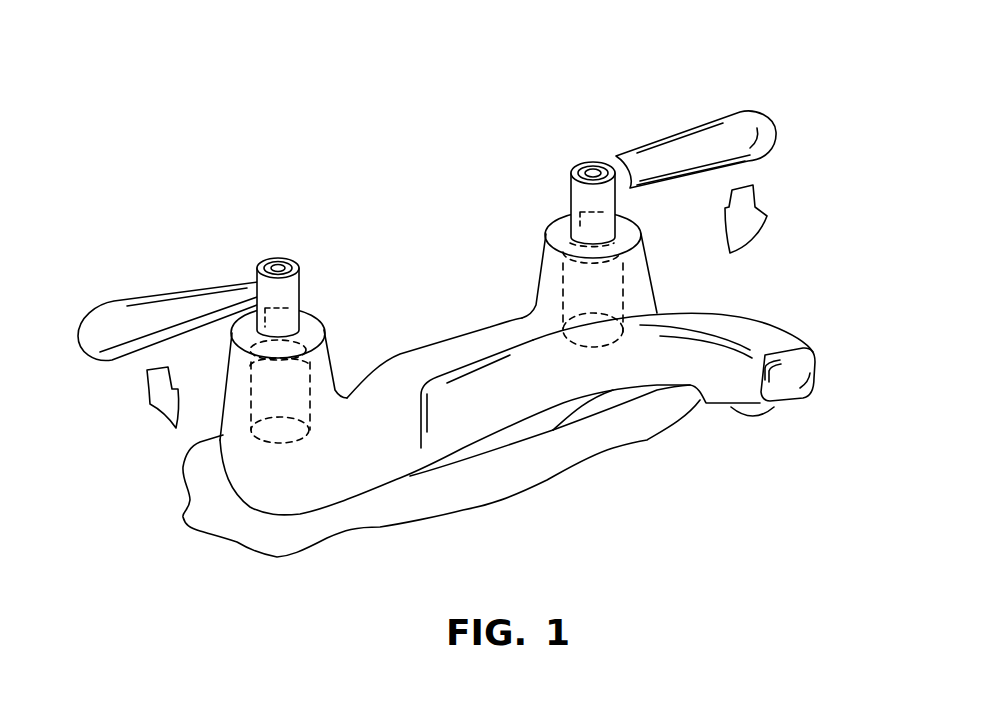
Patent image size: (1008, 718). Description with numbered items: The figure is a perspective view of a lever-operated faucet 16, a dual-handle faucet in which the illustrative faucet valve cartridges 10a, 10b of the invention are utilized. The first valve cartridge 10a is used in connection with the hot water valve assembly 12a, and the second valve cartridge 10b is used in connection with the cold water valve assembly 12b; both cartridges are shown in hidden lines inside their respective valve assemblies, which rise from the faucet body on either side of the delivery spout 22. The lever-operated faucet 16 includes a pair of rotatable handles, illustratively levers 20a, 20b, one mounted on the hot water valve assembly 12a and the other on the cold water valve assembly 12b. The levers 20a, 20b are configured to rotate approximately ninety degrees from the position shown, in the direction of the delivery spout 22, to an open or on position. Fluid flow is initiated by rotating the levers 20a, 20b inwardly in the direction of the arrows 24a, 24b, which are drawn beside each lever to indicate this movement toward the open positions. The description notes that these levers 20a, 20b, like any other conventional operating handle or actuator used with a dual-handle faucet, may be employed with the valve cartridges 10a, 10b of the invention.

The lever-operated faucet 16 is at (352, 136).
The faucet valve cartridge 10a is at (255, 459).
The faucet valve cartridge 10b is at (640, 286).
The hot water valve assembly 12a is at (239, 312).
The cold water valve assembly 12b is at (670, 195).
The lever 20a is at (152, 299).
The lever 20b is at (776, 128).
The delivery spout 22 is at (790, 328).
The arrow 24a is at (148, 403).
The arrow 24b is at (755, 194).